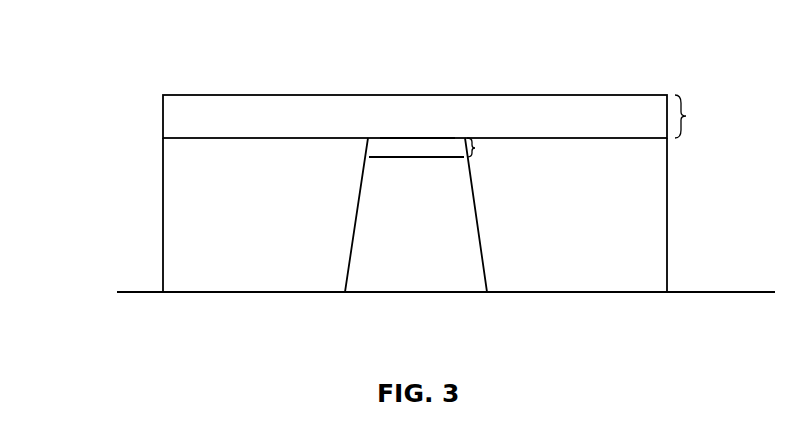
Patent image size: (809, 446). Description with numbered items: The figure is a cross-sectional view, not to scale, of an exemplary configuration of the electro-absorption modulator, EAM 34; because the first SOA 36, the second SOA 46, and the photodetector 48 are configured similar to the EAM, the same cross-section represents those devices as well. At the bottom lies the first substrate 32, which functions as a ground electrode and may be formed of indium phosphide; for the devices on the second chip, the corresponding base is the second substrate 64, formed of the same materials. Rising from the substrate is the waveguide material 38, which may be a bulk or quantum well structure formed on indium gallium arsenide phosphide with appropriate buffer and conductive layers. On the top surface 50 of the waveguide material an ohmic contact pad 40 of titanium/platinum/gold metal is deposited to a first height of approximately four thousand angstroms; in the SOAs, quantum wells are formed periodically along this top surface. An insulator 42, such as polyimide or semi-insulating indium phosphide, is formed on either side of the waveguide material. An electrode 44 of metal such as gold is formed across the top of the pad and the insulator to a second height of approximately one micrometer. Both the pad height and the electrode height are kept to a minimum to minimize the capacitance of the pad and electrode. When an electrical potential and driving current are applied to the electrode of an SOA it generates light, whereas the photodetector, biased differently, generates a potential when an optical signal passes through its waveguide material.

The EAM 34 is at (373, 174).
The first SOA 36 is at (373, 174).
The second SOA 46 is at (373, 174).
The photodetector 48 is at (199, 50).
The electrode 44 is at (600, 108).
The insulator 42 is at (177, 172).
The ohmic contact pad 40 is at (428, 149).
The top surface 50 is at (398, 146).
The waveguide material 38 is at (465, 277).
The first substrate 32 is at (448, 281).
The second substrate 64 is at (683, 299).